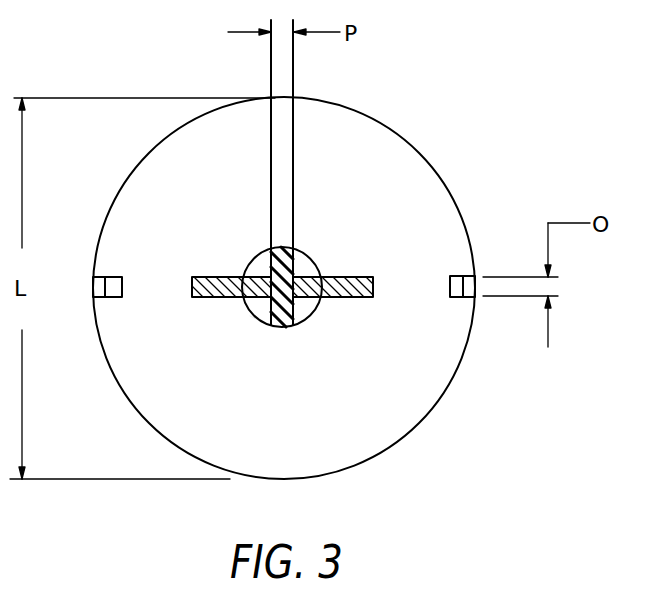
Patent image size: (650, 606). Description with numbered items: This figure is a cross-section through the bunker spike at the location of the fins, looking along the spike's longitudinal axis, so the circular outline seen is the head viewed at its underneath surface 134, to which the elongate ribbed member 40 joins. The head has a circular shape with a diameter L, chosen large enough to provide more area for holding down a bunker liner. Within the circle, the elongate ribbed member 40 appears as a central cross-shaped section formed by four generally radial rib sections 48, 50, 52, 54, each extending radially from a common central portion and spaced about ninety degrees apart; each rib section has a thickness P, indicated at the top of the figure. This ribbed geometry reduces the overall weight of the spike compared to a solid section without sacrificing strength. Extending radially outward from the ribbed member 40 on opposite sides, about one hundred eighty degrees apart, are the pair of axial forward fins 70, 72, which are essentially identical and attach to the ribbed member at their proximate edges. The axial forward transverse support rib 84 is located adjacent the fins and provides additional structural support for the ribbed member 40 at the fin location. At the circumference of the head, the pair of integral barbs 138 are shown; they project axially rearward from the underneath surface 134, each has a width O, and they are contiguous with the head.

The underneath surface 134 is at (413, 172).
The integral barbs 138 is at (113, 297).
The radial rib section 50 is at (282, 262).
The elongate ribbed member 40 is at (303, 315).
The axial forward fin 70 is at (212, 277).
The axial forward fin 72 is at (362, 277).
The radial rib section 48 is at (252, 282).
The radial rib section 52 is at (303, 287).
The axial forward transverse support rib 84 is at (252, 317).
The radial rib section 54 is at (283, 330).